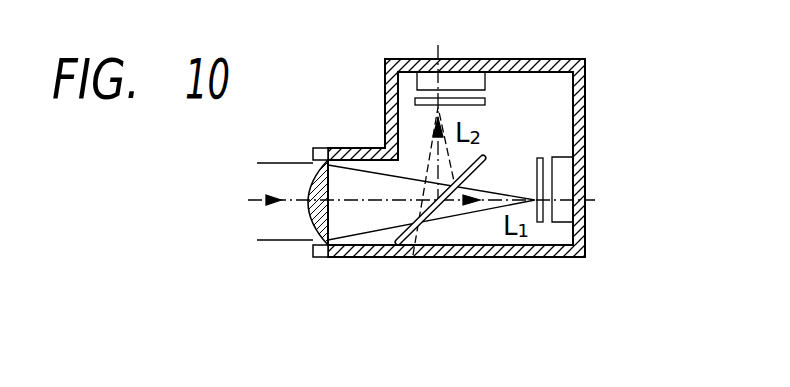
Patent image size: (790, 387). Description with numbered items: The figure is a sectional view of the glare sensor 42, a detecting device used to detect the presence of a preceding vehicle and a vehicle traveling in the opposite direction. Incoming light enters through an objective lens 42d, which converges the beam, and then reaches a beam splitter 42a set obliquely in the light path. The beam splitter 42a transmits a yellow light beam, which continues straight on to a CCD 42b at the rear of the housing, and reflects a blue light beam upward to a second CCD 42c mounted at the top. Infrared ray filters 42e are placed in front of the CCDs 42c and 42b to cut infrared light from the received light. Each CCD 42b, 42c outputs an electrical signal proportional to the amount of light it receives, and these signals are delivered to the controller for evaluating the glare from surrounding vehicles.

The glare sensor 42 is at (594, 140).
The beam splitter 42a is at (413, 243).
The CCD 42b is at (565, 180).
The CCD 42c is at (472, 84).
The objective lens 42d is at (316, 218).
The infrared ray filter 42e is at (414, 102).